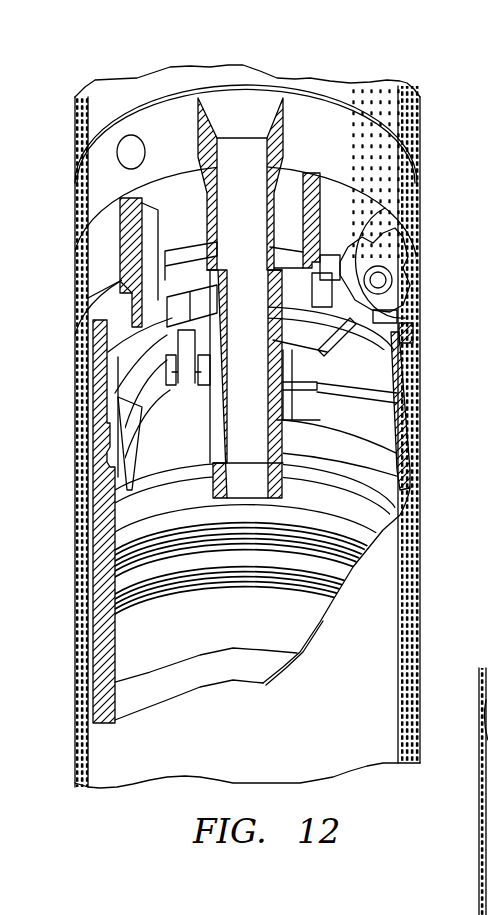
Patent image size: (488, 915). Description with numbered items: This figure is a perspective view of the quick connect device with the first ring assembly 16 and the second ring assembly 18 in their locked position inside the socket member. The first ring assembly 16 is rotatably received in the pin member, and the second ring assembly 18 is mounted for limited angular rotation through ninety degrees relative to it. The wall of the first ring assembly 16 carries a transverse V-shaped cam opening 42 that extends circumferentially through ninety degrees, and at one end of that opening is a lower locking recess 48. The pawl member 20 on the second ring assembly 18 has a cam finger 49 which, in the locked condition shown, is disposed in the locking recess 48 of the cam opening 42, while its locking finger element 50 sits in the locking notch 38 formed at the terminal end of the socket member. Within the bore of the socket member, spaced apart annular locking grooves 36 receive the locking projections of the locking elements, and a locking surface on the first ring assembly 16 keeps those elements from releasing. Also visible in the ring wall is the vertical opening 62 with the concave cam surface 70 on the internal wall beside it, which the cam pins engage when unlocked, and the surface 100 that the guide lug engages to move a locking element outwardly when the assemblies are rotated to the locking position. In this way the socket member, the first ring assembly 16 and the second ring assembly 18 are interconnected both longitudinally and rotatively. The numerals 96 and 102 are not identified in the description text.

The first ring assembly 16 is at (328, 138).
The second ring assembly 18 is at (370, 163).
The pawl member 20 is at (487, 808).
The annular locking grooves 36 is at (100, 477).
The locking notch 38 is at (415, 337).
The cam opening 42 is at (290, 255).
The lower locking recess 48 is at (407, 290).
The cam finger 49 is at (380, 206).
The locking finger element 50 is at (407, 308).
The vertical opening 62 is at (186, 313).
The cam surface 70 is at (116, 353).
The port 96 is at (487, 858).
The surface 100 is at (190, 330).
The locking post 102 is at (287, 397).